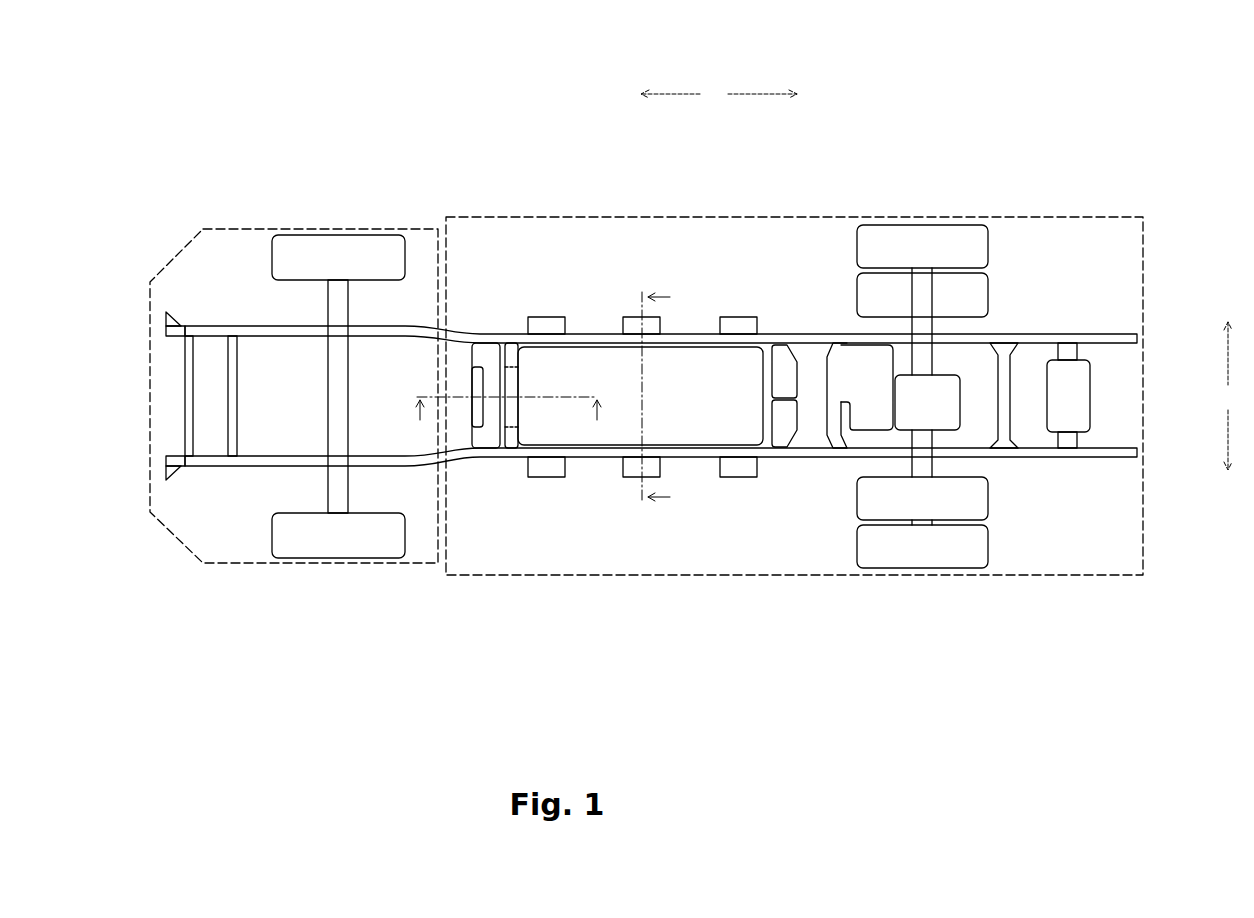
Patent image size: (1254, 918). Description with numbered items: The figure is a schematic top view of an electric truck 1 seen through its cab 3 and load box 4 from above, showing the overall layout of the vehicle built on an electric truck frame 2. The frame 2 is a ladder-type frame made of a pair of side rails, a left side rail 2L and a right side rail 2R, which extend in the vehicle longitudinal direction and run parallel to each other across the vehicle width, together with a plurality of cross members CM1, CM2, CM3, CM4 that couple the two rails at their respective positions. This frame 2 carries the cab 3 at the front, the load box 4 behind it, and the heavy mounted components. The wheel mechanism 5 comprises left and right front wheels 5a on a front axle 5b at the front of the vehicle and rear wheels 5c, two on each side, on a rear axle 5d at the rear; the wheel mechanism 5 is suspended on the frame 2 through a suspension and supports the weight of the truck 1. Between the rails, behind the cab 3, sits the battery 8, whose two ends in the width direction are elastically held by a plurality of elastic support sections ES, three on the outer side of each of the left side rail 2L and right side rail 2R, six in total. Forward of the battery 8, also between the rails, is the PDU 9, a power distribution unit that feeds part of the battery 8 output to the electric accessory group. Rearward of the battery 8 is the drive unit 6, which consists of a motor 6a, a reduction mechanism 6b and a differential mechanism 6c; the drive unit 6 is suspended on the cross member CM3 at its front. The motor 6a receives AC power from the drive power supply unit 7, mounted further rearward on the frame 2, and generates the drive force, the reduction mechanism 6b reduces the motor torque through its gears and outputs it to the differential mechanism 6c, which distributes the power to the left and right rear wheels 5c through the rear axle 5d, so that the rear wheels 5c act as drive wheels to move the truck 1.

The electric truck 1 is at (252, 123).
The electric truck frame 2 is at (592, 396).
The right side rail 2R is at (165, 328).
The left side rail 2L is at (614, 451).
The cab 3 is at (214, 228).
The load box 4 is at (466, 216).
The wheel mechanism 5 is at (630, 418).
The front wheels 5a is at (314, 236).
The front axle 5b is at (345, 501).
The rear wheels 5c is at (957, 289).
The rear axle 5d is at (922, 471).
The drive unit 6 is at (834, 288).
The motor 6a is at (783, 418).
The reduction mechanism 6b is at (860, 365).
The differential mechanism 6c is at (925, 385).
The drive power supply unit 7 is at (1077, 393).
The battery 8 is at (606, 359).
The PDU 9 is at (478, 373).
The cross member CM1 is at (192, 434).
The cross member CM2 is at (494, 436).
The cross member CM3 is at (812, 431).
The cross member CM4 is at (1003, 438).
The elastic support sections ES is at (545, 316).